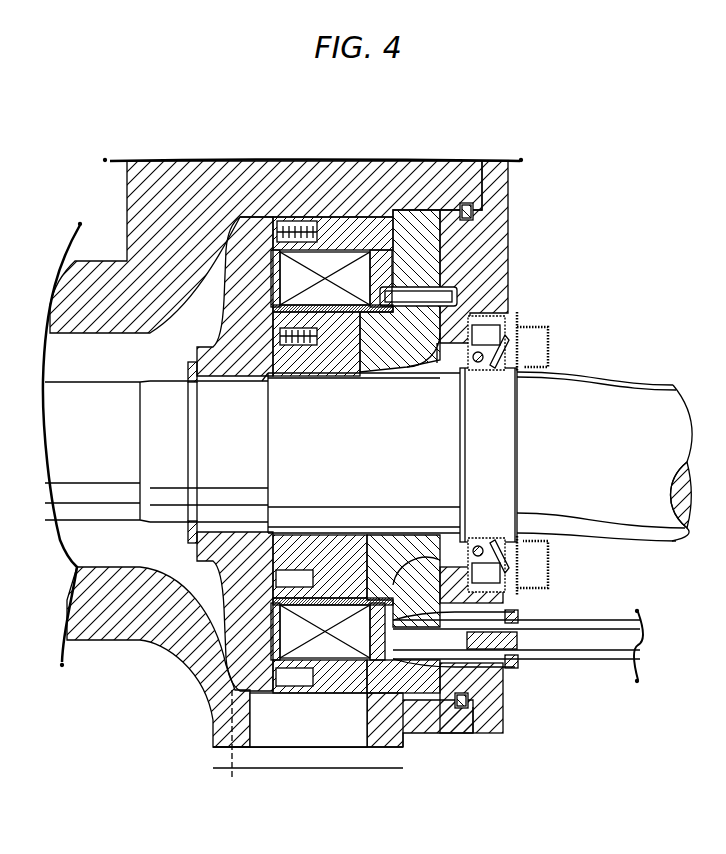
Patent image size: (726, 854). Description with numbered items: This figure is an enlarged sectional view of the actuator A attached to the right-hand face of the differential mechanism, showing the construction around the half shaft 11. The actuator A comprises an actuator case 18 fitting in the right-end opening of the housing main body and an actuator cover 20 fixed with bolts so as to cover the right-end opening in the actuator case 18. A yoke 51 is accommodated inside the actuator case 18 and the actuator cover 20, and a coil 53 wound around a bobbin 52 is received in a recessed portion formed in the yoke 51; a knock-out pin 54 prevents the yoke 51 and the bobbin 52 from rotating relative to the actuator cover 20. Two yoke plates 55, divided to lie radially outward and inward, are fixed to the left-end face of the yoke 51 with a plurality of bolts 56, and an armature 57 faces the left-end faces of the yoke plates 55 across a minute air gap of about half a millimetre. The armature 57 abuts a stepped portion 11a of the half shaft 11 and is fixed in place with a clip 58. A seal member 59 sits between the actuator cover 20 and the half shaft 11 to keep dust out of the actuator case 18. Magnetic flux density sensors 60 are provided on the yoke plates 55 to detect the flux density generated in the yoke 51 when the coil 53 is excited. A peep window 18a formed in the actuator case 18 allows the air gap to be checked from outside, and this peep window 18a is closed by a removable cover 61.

The half shaft 11 is at (368, 455).
The stepped portion 11a is at (253, 388).
The actuator case 18 is at (122, 212).
The peep window 18a is at (258, 702).
The actuator cover 20 is at (500, 250).
The yoke 51 is at (400, 360).
The bobbin 52 is at (362, 365).
The coil 53 is at (332, 612).
The knock-out pin 54 is at (412, 298).
The yoke plate 55 is at (278, 215).
The bolt 56 is at (298, 218).
The armature 57 is at (247, 550).
The clip 58 is at (187, 368).
The seal member 59 is at (500, 330).
The magnetic flux density sensor 60 is at (298, 578).
The removable cover 61 is at (335, 768).
The actuator A is at (518, 210).